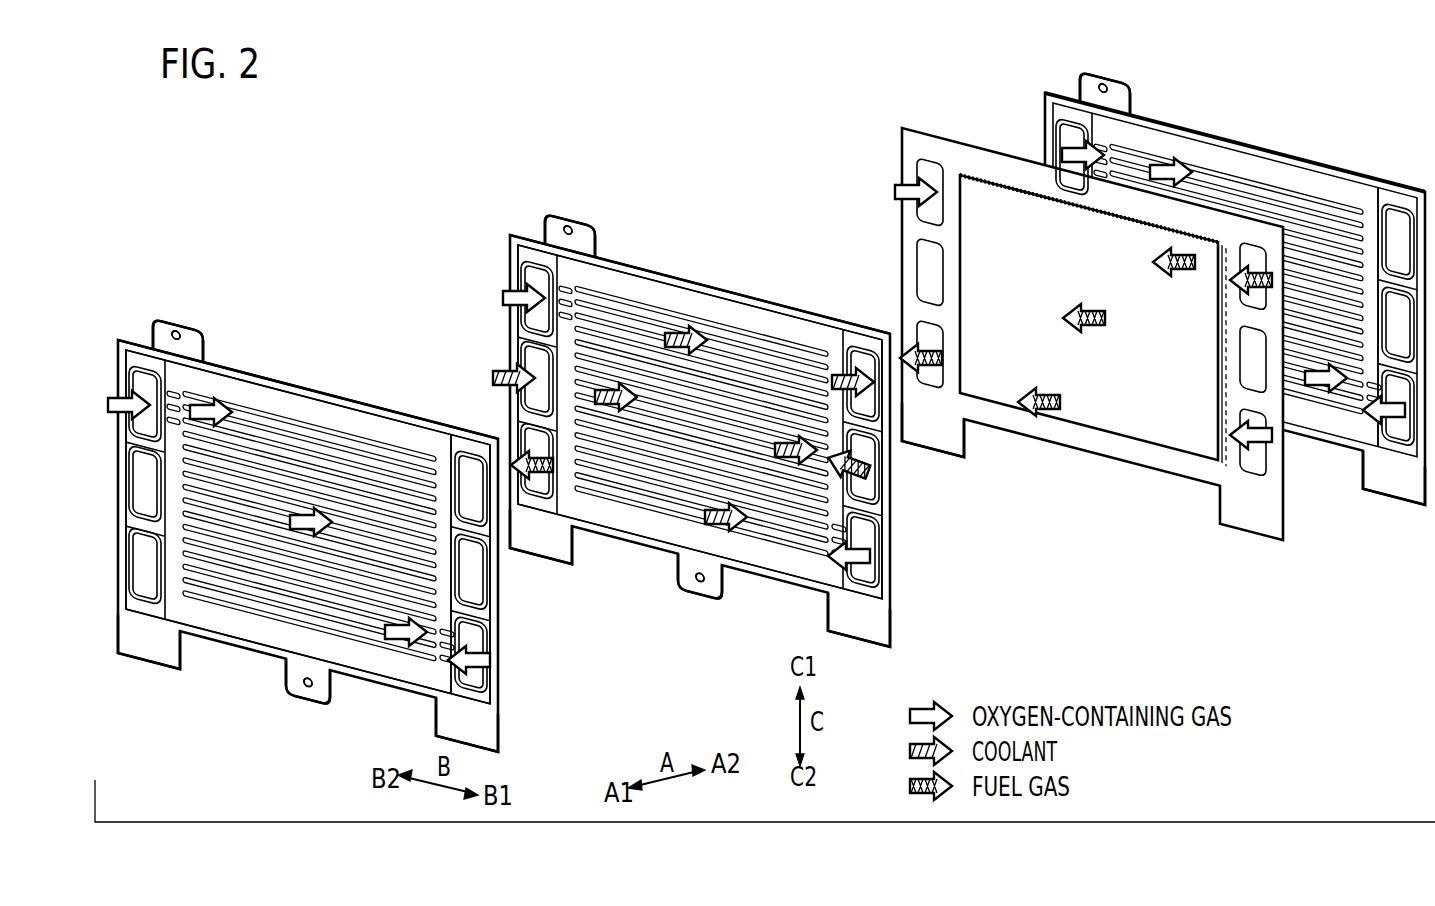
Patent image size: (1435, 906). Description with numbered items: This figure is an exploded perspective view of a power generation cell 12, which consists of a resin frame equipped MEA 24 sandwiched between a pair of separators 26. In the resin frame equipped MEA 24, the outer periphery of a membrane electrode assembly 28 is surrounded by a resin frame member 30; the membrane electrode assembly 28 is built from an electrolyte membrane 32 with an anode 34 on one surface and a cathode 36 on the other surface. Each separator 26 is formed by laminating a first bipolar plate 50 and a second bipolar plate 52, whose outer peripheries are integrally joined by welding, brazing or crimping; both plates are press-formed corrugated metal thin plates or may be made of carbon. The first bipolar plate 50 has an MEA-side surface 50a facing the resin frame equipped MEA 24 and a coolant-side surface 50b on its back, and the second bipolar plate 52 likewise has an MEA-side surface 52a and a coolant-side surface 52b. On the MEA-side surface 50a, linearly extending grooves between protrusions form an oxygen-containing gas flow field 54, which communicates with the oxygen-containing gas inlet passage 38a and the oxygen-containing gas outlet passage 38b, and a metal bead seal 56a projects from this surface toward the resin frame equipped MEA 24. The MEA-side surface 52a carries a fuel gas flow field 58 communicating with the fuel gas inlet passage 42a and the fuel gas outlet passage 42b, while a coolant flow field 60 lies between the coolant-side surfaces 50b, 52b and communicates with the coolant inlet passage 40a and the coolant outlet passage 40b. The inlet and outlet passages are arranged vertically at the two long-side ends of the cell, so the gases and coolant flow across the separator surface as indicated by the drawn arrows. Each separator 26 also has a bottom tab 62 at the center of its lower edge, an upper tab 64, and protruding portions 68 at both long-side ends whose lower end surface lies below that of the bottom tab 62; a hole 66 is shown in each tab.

The power generation cell 12 is at (490, 76).
The resin frame equipped MEA 24 is at (1067, 336).
The separator 26 is at (771, 376).
The membrane electrode assembly 28 is at (1111, 407).
The resin frame member 30 is at (901, 130).
The electrolyte membrane 32 is at (1222, 422).
The anode 34 is at (1173, 438).
The cathode 36 is at (1230, 452).
The oxygen-containing gas inlet passage 38a is at (141, 371).
The oxygen-containing gas outlet passage 38b is at (480, 675).
The coolant inlet passage 40a is at (150, 505).
The coolant outlet passage 40b is at (480, 590).
The fuel gas inlet passage 42a is at (471, 455).
The fuel gas outlet passage 42b is at (142, 592).
The first bipolar plate 50 is at (146, 343).
The MEA-side surface 50a is at (306, 397).
The coolant-side surface 50b is at (350, 405).
The second bipolar plate 52 is at (510, 234).
The MEA-side surface 52a is at (787, 315).
The coolant-side surface 52b is at (742, 300).
The oxygen-containing gas flow field 54 is at (269, 588).
The metal bead seal 56a is at (388, 426).
The fuel gas flow field 58 is at (1076, 368).
The coolant flow field 60 is at (661, 485).
The bottom tab 62 is at (326, 700).
The upper tab 64 is at (184, 322).
The hole 66 is at (182, 335).
The protruding portion 68 is at (175, 648).